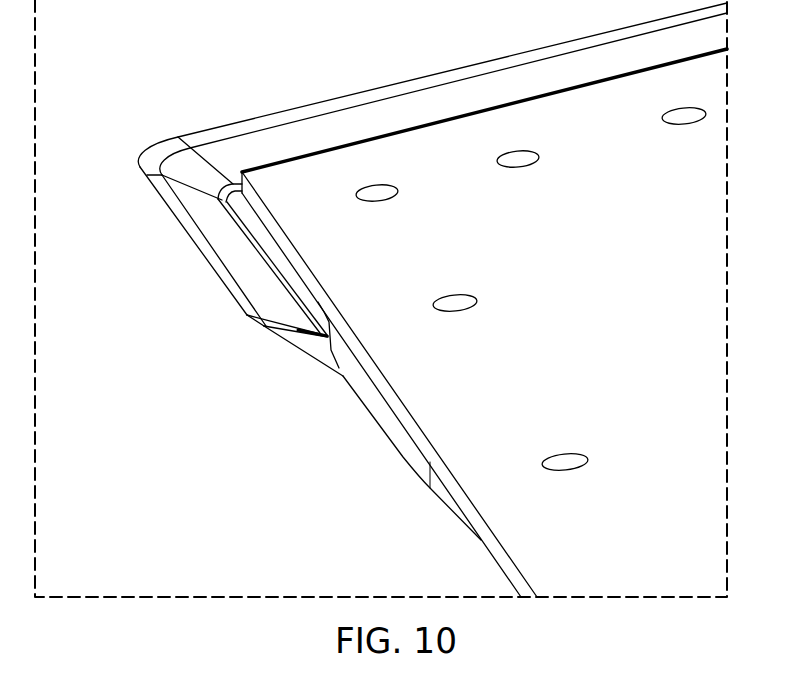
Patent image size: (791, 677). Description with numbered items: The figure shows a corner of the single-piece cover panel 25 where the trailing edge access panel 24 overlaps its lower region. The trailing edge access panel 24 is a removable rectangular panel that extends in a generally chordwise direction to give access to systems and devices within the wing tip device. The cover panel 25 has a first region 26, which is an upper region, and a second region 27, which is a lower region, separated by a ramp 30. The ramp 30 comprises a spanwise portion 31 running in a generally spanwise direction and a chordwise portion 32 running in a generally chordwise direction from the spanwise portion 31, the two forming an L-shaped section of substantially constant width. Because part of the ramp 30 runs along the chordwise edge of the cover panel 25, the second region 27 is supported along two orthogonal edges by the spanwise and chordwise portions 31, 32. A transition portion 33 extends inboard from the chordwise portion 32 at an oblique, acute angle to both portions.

The trailing edge access panel 24 is at (596, 318).
The single-piece cover panel 25 is at (195, 48).
The first region 26 is at (161, 433).
The second region 27 is at (238, 199).
The ramp 30 is at (407, 108).
The spanwise portion 31 is at (488, 60).
The chordwise portion 32 is at (268, 297).
The transition portion 33 is at (301, 342).